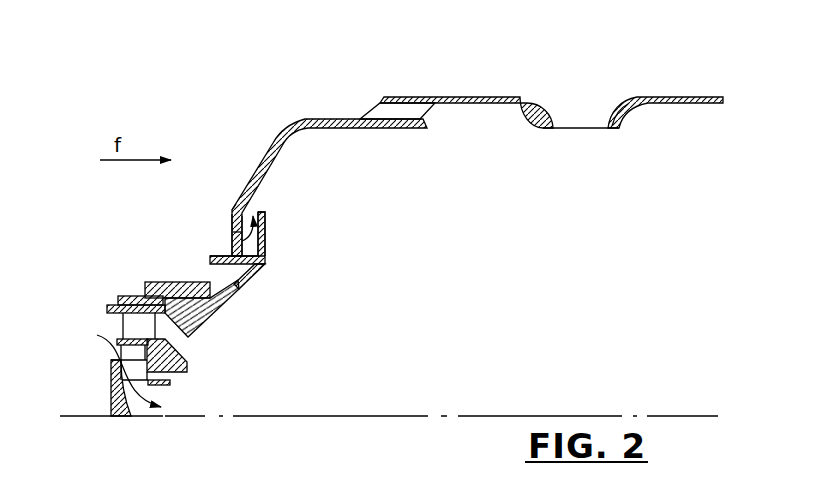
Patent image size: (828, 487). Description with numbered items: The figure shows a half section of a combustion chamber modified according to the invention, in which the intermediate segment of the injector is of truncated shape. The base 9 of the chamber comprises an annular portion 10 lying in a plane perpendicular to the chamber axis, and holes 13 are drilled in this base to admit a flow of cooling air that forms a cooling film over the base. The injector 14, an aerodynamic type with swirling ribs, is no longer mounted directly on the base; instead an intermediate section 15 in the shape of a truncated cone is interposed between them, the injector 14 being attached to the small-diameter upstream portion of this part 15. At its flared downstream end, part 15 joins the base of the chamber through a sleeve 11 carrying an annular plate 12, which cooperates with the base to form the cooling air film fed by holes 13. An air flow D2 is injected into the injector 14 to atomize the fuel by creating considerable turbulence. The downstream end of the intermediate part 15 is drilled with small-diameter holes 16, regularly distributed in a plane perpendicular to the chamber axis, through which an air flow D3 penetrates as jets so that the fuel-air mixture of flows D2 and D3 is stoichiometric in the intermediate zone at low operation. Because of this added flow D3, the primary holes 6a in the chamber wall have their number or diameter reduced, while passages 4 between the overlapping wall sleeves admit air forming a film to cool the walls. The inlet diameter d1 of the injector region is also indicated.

The passages 4 is at (377, 110).
The primary holes 6a is at (594, 127).
The base of the chamber 9 is at (247, 135).
The annular portion 10 is at (235, 223).
The cylindrical sleeve 11 is at (209, 257).
The annular plate 12 is at (266, 253).
The holes 13 is at (232, 231).
The injector 14 is at (110, 397).
The intermediate section 15 is at (231, 288).
The holes 16 is at (256, 283).
The air flow D2 is at (206, 361).
The air flow D3 is at (246, 276).
The inlet diameter d1 is at (233, 231).